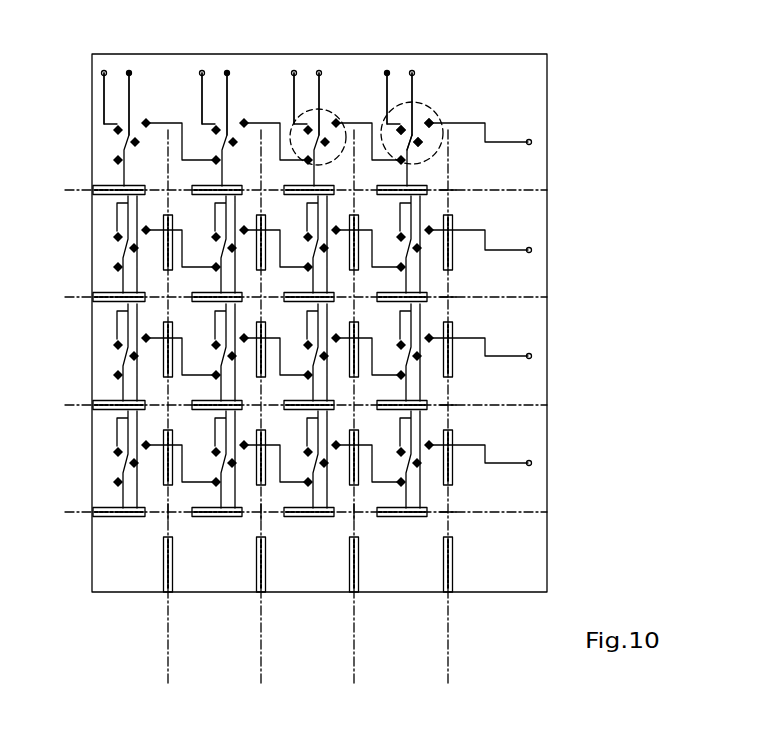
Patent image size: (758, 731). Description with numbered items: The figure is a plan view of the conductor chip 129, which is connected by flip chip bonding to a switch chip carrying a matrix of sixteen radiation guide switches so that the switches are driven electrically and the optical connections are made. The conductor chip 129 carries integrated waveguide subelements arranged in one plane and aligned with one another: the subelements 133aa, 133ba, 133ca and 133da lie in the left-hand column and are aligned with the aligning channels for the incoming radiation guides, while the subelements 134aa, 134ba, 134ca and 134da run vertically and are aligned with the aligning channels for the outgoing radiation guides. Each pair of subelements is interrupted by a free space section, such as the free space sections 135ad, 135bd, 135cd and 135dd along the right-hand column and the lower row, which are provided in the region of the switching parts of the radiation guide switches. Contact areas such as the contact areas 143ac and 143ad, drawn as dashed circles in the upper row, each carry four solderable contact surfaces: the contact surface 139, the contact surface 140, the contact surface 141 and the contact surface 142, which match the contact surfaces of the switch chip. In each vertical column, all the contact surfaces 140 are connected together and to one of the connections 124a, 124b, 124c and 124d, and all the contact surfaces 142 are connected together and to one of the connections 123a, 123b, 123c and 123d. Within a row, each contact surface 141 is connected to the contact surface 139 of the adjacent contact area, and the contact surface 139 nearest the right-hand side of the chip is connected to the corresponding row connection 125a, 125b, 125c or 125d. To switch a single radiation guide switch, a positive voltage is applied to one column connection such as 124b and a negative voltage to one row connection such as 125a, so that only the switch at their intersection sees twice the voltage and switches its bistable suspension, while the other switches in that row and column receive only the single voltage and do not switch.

The electrical drive connection 123a is at (101, 73).
The electrical drive connection 123b is at (199, 73).
The electrical drive connection 123c is at (291, 73).
The electrical drive connection 123d is at (384, 73).
The electrical drive connection 124a is at (129, 70).
The electrical drive connection 124b is at (227, 70).
The electrical drive connection 124c is at (319, 70).
The electrical drive connection 124d is at (412, 70).
The electrical drive connection 125a is at (481, 127).
The electrical drive connection 125b is at (482, 237).
The electrical drive connection 125c is at (480, 344).
The electrical drive connection 125d is at (480, 451).
The conductor chip 129 is at (554, 92).
The waveguide subelement 133aa is at (120, 197).
The waveguide subelement 133ba is at (120, 304).
The waveguide subelement 133ca is at (120, 412).
The waveguide subelement 133da is at (120, 519).
The waveguide subelement 134aa is at (163, 258).
The waveguide subelement 134ba is at (163, 365).
The waveguide subelement 134ca is at (163, 473).
The waveguide subelement 134da is at (163, 541).
The free space section 135ad is at (453, 199).
The free space section 135bd is at (453, 306).
The free space section 135cd is at (453, 414).
The free space section 135dd is at (453, 522).
The contact surface 139 is at (429, 116).
The contact surface 140 is at (423, 138).
The contact surface 141 is at (410, 147).
The contact surface 142 is at (398, 122).
The contact area 143ac is at (322, 108).
The contact area 143ad is at (416, 104).